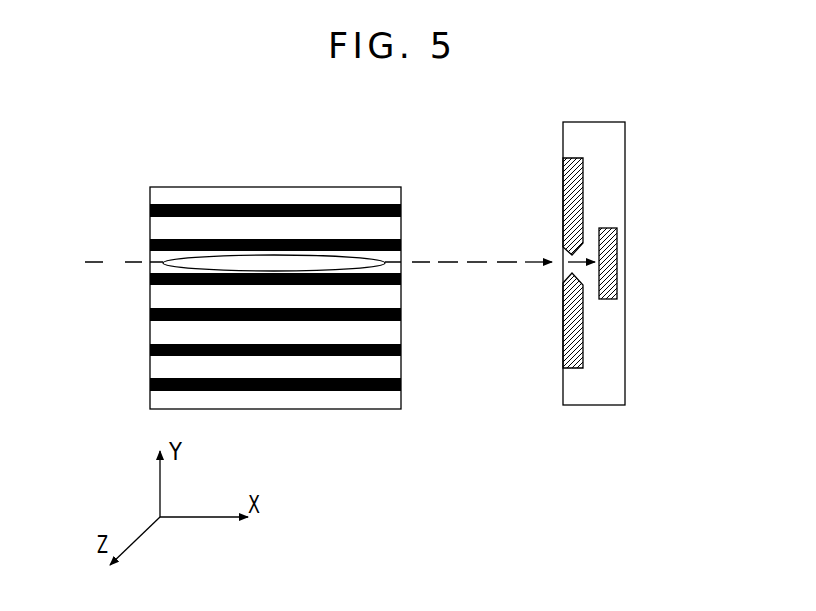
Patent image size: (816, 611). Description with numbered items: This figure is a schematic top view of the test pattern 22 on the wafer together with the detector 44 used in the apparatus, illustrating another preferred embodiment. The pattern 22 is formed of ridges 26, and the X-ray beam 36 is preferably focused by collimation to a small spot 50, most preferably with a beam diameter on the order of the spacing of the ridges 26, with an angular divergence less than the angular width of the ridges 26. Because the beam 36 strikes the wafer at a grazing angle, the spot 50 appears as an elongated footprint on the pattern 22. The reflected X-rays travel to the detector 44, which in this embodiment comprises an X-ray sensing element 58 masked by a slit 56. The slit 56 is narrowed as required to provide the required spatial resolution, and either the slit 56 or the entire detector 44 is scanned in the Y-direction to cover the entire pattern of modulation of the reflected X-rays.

The pattern 22 is at (290, 187).
The ridges 26 is at (150, 235).
The X-ray beam 36 is at (103, 265).
The detector 44 is at (607, 122).
The spot 50 is at (355, 272).
The slit 56 is at (570, 180).
The X-ray sensing element 58 is at (610, 252).